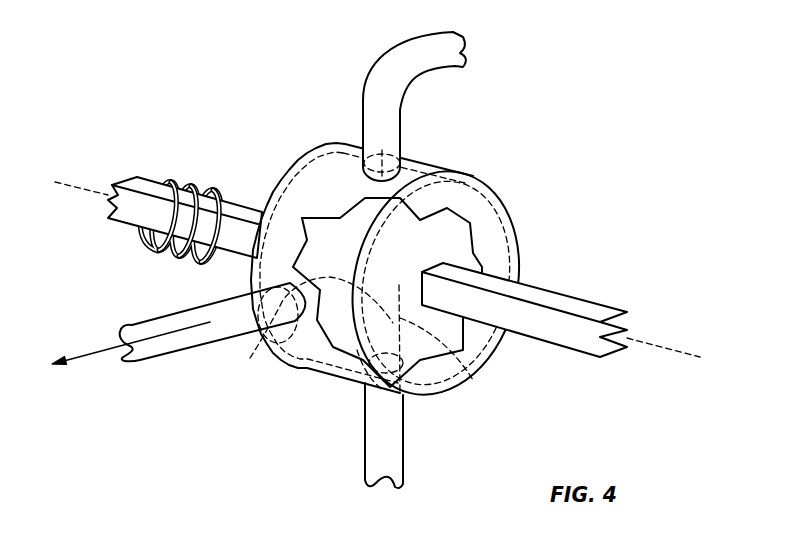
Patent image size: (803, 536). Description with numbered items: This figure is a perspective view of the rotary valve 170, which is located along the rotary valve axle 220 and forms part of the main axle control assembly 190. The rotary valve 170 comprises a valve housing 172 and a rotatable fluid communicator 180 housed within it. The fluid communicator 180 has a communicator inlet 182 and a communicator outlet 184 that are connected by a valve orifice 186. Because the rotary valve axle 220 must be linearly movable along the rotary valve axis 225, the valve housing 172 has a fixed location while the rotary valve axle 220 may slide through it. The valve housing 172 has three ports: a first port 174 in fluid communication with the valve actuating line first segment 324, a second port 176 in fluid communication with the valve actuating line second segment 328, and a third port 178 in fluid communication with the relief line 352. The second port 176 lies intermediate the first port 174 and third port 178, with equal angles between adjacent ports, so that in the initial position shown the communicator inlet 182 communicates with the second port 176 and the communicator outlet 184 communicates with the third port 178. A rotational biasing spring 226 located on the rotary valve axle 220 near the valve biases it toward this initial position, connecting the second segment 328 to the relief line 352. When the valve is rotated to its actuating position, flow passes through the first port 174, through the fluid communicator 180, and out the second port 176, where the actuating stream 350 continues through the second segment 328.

The rotary valve 170 is at (530, 197).
The valve housing 172 is at (470, 172).
The first port 174 is at (393, 155).
The second port 176 is at (252, 357).
The third port 178 is at (365, 390).
The fluid communicator 180 is at (336, 148).
The communicator inlet 182 is at (258, 288).
The communicator outlet 184 is at (447, 400).
The valve orifice 186 is at (483, 369).
The main axle control assembly 190 is at (549, 310).
The rotary valve axle 220 is at (528, 290).
The rotary valve axis 225 is at (647, 340).
The rotational biasing spring 226 is at (207, 182).
The valve actuating line first segment 324 is at (432, 43).
The valve actuating line second segment 328 is at (177, 318).
The actuating stream 350 is at (100, 357).
The relief line 352 is at (393, 433).